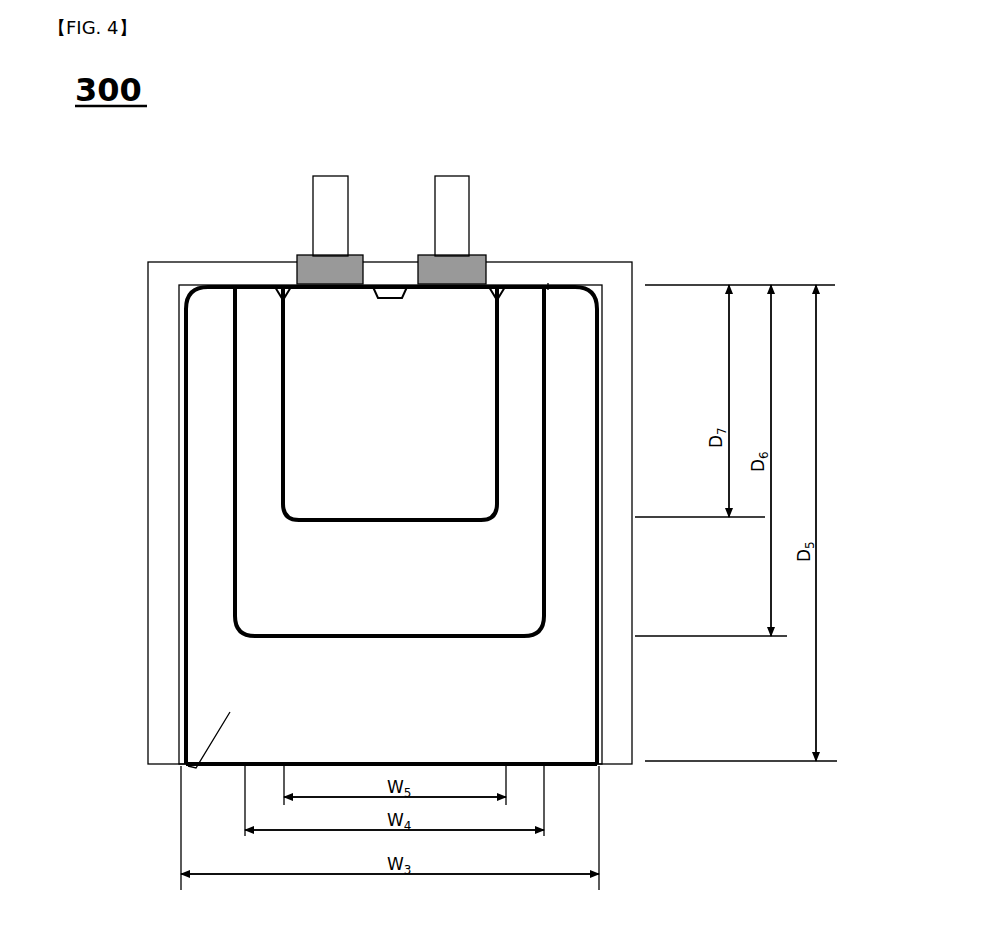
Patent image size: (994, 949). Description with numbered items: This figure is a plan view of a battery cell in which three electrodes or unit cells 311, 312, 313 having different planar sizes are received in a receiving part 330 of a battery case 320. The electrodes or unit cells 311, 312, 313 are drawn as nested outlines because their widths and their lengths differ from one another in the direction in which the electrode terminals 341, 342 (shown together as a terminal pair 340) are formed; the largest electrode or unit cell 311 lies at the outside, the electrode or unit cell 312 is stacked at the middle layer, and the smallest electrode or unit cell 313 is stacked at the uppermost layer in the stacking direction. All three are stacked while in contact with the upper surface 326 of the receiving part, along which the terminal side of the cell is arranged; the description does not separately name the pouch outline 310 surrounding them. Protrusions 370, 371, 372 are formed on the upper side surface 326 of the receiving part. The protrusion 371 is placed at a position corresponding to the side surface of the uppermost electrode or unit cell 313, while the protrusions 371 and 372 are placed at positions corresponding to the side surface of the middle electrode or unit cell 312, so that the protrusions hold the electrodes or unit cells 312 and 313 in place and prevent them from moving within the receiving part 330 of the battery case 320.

The pouch case 310 is at (600, 372).
The electrode or unit cell 311 is at (178, 764).
The electrode or unit cell 312 is at (527, 447).
The electrode or unit cell 313 is at (325, 387).
The battery case 320 is at (636, 270).
The upper surface of the receiving part 326 is at (548, 283).
The receiving part 330 is at (606, 320).
The electrode leads 340 is at (420, 162).
The positive electrode lead 341 is at (324, 176).
The negative electrode lead 342 is at (482, 190).
The protrusion 370 is at (282, 296).
The protrusion 371 is at (398, 290).
The protrusion 372 is at (497, 292).